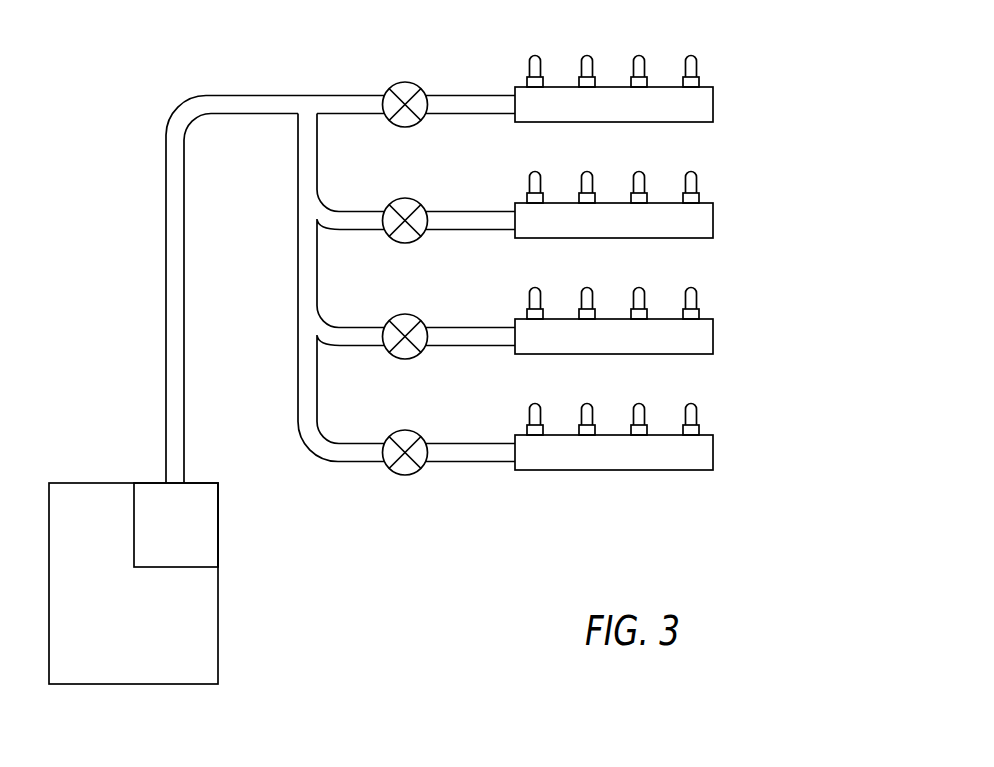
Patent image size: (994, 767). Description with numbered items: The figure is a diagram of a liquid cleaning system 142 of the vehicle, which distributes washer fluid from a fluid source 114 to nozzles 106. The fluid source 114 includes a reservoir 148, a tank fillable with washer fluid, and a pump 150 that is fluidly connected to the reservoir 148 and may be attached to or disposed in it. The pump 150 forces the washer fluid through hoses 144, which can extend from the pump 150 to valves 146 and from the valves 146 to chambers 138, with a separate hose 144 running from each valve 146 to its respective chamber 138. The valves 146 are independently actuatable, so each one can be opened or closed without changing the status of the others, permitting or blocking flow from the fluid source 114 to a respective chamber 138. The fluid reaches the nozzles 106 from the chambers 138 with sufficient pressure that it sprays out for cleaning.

The nozzles 106 is at (531, 57).
The fluid source 114 is at (218, 552).
The chambers 138 is at (713, 96).
The liquid cleaning system 142 is at (486, 295).
The hoses 144 is at (238, 114).
The valves 146 is at (394, 198).
The reservoir 148 is at (218, 623).
The pump 150 is at (218, 522).